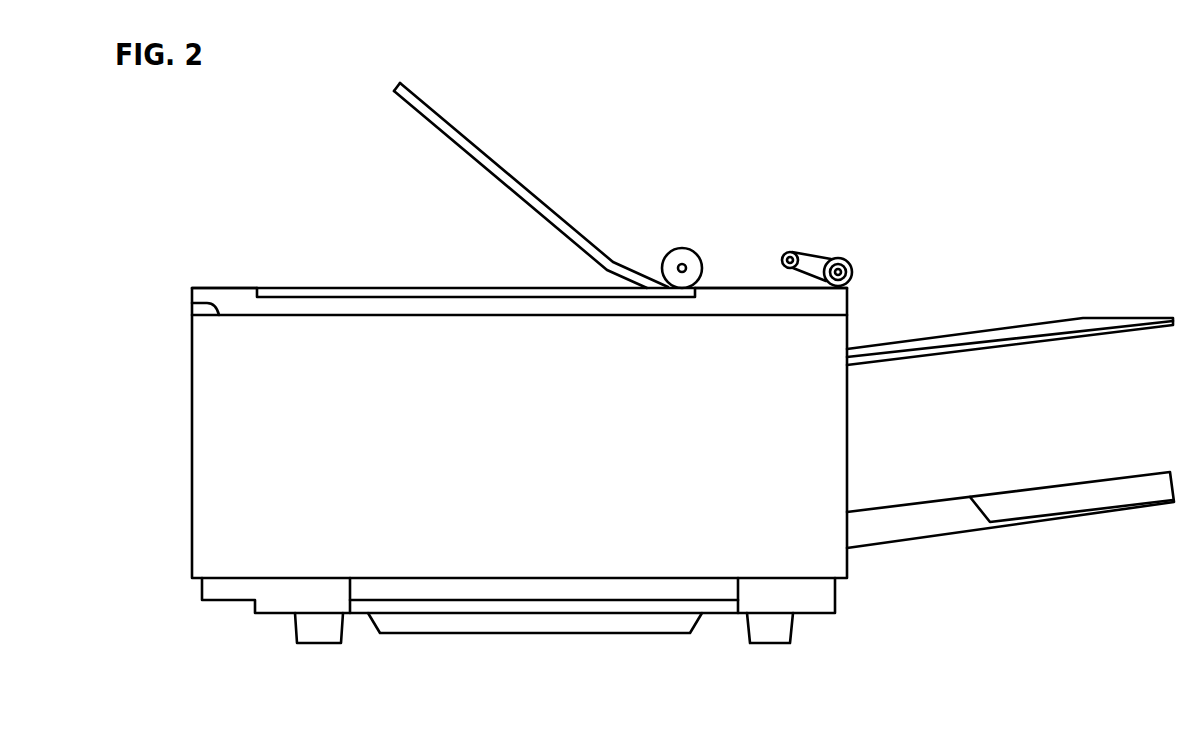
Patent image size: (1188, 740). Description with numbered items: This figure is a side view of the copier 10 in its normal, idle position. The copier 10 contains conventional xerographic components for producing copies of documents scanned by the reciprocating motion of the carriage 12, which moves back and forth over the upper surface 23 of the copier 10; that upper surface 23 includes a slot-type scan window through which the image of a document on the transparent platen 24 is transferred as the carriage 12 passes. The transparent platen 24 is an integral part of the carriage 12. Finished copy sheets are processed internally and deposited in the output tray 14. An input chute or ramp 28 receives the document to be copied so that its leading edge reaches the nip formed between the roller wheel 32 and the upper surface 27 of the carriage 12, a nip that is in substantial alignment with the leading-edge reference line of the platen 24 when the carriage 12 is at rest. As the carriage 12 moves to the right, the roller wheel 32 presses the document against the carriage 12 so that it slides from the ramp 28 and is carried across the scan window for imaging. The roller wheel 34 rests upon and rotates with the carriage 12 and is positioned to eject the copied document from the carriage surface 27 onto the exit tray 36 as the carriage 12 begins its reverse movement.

The copier 10 is at (215, 407).
The carriage 12 is at (239, 293).
The output tray 14 is at (967, 530).
The upper surface 23 is at (192, 303).
The transparent platen 24 is at (347, 292).
The surface 27 is at (739, 285).
The input chute or ramp 28 is at (513, 180).
The roller wheel 32 is at (687, 257).
The roller wheel 34 is at (843, 263).
The exit tray 36 is at (969, 348).